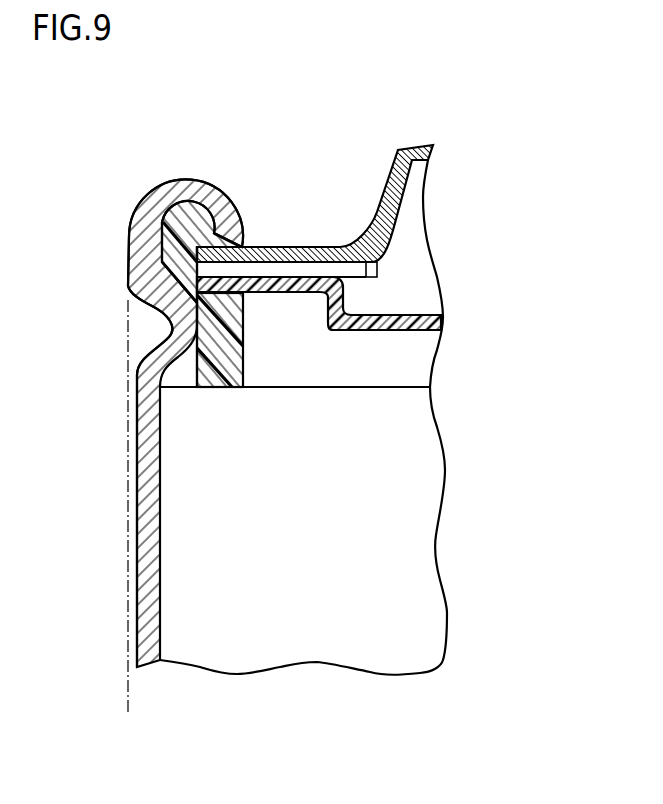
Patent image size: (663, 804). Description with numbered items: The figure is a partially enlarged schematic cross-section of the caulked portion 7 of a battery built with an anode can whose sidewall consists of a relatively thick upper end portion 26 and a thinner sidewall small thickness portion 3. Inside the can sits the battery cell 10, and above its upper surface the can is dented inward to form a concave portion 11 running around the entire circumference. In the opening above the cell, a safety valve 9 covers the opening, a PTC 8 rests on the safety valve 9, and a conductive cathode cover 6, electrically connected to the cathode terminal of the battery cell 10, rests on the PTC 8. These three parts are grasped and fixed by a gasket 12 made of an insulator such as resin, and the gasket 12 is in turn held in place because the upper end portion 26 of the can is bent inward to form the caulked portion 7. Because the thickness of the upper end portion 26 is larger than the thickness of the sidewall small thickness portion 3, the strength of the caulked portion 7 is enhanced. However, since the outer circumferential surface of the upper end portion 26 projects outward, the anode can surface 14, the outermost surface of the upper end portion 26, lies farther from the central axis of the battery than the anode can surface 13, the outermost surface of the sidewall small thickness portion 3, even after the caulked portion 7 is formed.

The sidewall small thickness portion 3 is at (151, 563).
The cathode cover 6 is at (415, 145).
The caulked portion 7 is at (222, 150).
The PTC 8 is at (377, 268).
The safety valve 9 is at (427, 325).
The battery cell 10 is at (397, 545).
The concave portion 11 is at (175, 326).
The gasket 12 is at (188, 222).
The anode can surface 13 is at (137, 477).
The anode can surface 14 is at (127, 272).
The upper end portion 26 is at (152, 193).